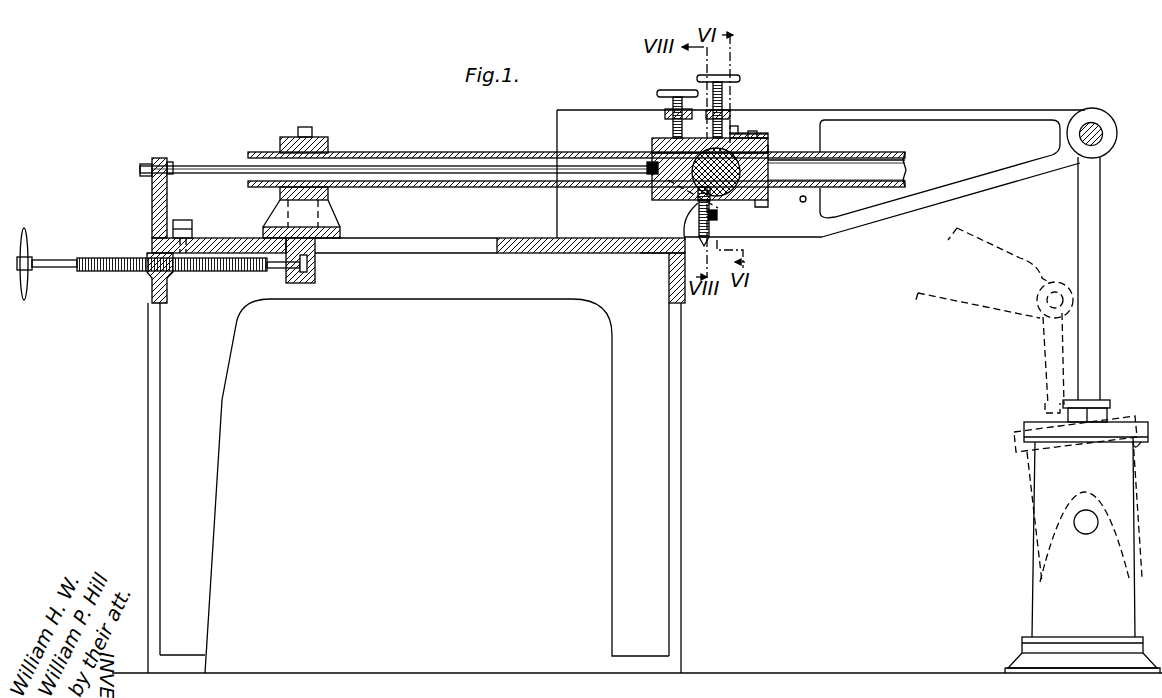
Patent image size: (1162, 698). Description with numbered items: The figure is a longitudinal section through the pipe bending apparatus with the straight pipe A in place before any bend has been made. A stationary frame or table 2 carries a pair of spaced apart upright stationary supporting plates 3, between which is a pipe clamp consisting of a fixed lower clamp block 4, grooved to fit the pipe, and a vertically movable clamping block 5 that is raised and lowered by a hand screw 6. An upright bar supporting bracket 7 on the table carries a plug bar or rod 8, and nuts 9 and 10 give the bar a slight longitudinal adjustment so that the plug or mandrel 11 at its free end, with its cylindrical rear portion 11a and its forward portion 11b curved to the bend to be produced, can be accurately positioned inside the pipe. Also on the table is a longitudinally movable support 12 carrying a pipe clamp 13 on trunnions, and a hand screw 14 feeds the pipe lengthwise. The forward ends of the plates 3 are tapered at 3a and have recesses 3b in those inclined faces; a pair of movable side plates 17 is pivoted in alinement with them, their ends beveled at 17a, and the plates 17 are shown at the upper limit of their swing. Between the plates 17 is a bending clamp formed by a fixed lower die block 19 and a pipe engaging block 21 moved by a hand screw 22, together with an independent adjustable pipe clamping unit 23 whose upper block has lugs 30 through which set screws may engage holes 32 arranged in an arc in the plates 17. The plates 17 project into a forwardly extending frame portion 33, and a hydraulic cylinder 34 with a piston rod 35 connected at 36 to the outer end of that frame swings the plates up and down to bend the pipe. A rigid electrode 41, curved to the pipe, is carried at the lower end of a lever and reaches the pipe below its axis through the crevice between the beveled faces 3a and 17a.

The stationary frame or table 2 is at (205, 439).
The upright stationary supporting plates 3 is at (580, 118).
The tapered or beveled end face 3a is at (680, 258).
The recess 3b is at (662, 254).
The fixed lower clamp member or block 4 is at (652, 193).
The vertically movable clamping block 5 is at (652, 144).
The hand screw 6 is at (666, 97).
The standard 7 is at (152, 199).
The plug bar or rod 8 is at (215, 166).
The nut 9 is at (170, 160).
The nut 10 is at (152, 162).
The plug or mandrel 11 is at (752, 200).
The cylindrical rear portion 11a is at (687, 203).
The forward portion 11b is at (770, 151).
The longitudinally movable support 12 is at (347, 220).
The pipe clamp 13 is at (330, 140).
The hand screw 14 is at (113, 270).
The movable side plates 17 is at (762, 128).
The beveled or inclined end 17a is at (712, 220).
The fixed lower die block 19 is at (725, 206).
The pipe engaging block or clamp member 21 is at (735, 127).
The hand screw 22 is at (704, 78).
The adjustable pipe clamping unit 23 is at (772, 138).
The upwardly extending lug 30 is at (752, 131).
The holes or recesses 32 is at (806, 200).
The forwardly extending frame portion 33 is at (975, 116).
The hydraulic cylinder 34 is at (1045, 488).
The piston rod 35 is at (1073, 351).
The connection 36 is at (1092, 127).
The rigid electrode 41 is at (718, 198).
The pipe A is at (460, 152).